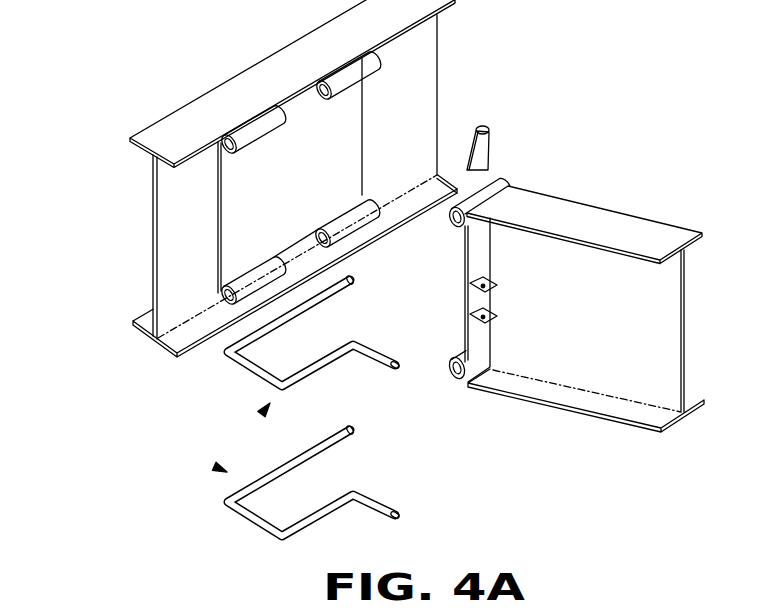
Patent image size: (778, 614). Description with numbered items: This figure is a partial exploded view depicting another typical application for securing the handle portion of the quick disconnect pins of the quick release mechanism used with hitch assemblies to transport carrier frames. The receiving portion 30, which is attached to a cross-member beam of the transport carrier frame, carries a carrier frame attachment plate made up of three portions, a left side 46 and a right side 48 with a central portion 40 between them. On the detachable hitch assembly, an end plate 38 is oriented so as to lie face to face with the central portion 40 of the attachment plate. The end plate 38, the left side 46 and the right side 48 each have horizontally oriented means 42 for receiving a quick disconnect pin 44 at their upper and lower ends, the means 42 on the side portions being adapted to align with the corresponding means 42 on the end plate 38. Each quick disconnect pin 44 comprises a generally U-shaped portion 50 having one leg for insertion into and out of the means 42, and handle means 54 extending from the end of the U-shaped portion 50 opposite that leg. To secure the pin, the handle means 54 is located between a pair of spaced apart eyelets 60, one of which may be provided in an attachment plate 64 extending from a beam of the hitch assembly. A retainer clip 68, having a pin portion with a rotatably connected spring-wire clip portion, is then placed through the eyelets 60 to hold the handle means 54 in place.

The receiving portion 30 is at (175, 258).
The end plate 38 is at (480, 342).
The central portion 40 is at (293, 170).
The means for receiving a quick disconnect pin 42 is at (250, 133).
The quick disconnect pin 44 is at (261, 414).
The left side portion 46 is at (240, 203).
The right side portion 48 is at (350, 143).
The U-shaped portion 50 is at (248, 513).
The handle means 54 is at (372, 357).
The eyelet 60 is at (485, 286).
The attachment plate 64 is at (497, 317).
The retainer clip 68 is at (507, 136).